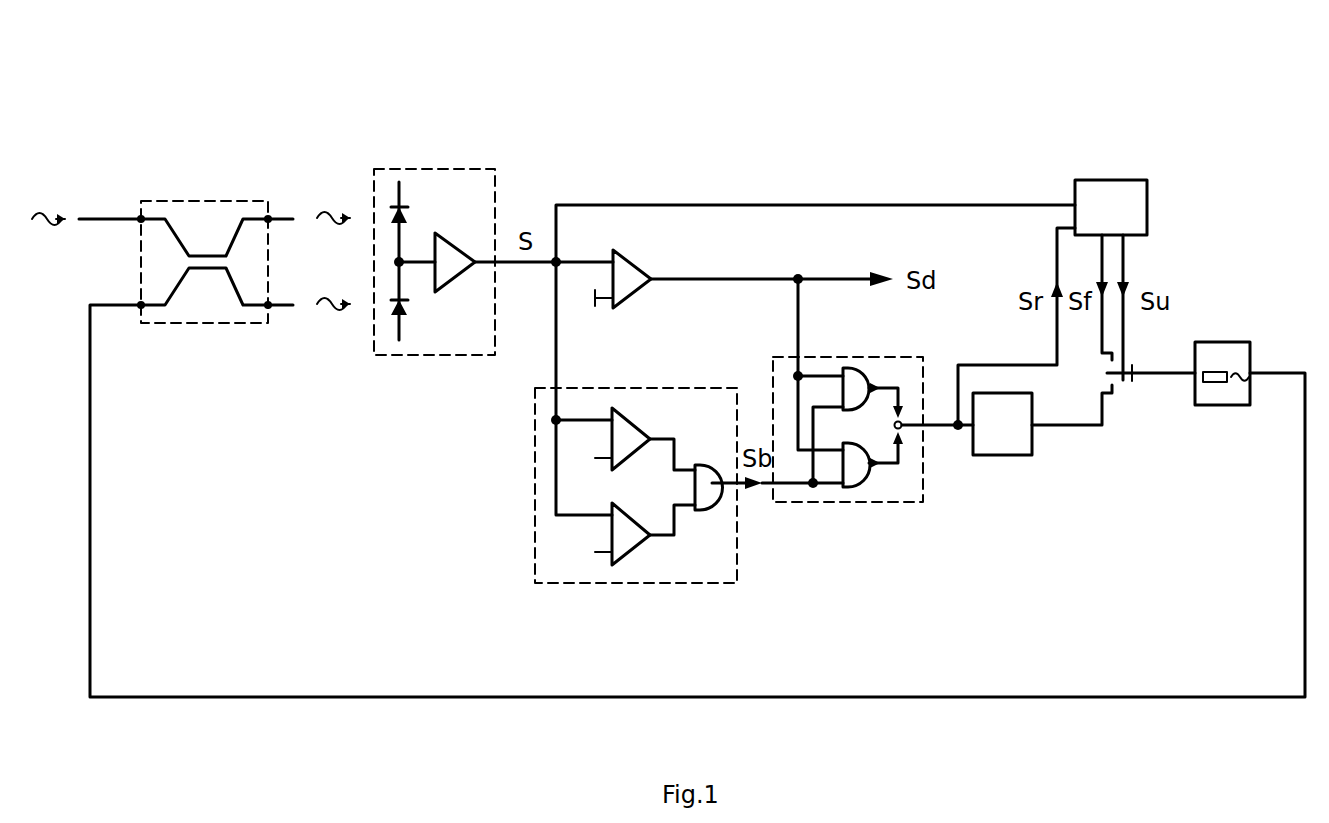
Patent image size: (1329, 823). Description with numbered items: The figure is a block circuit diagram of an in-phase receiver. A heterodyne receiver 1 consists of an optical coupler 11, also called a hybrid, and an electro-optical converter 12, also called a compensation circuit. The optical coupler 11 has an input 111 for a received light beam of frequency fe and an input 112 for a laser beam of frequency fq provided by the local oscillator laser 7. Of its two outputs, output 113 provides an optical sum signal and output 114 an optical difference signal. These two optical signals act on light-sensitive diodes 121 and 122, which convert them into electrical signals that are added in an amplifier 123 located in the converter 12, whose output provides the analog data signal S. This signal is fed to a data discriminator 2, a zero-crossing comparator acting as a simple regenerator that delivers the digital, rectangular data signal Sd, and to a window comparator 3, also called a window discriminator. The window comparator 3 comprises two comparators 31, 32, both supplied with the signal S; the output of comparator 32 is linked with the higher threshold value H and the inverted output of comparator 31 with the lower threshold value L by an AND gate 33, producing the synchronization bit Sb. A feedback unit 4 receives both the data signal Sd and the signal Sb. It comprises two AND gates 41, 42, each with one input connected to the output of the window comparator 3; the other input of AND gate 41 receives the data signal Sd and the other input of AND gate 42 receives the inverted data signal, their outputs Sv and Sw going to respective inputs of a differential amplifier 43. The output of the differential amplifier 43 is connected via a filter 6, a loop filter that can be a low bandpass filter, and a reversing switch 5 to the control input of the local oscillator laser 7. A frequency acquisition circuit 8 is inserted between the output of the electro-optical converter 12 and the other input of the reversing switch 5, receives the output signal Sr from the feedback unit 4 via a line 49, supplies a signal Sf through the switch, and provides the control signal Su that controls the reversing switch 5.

The heterodyne receiver 1 is at (915, 81).
The optical coupler 11 is at (204, 295).
The input 111 is at (115, 193).
The input 112 is at (142, 345).
The output 113 is at (301, 193).
The output 114 is at (300, 333).
The electro-optical converter 12 is at (443, 260).
The light-sensitive diode 121 is at (369, 175).
The light-sensitive diode 122 is at (373, 353).
The amplifier 123 is at (473, 203).
The data discriminator 2 is at (632, 267).
The window comparator 3 is at (655, 481).
The comparator 31 is at (647, 564).
The comparator 32 is at (648, 403).
The AND gate 33 is at (735, 512).
The feedback unit 4 is at (870, 436).
The AND gate 41 is at (856, 361).
The AND gate 42 is at (863, 499).
The differential amplifier 43 is at (931, 373).
The line 49 is at (1016, 326).
The reversing switch 5 is at (1151, 406).
The filter 6 is at (1006, 451).
The local oscillator laser 7 is at (1225, 342).
The frequency acquisition circuit 8 is at (1111, 180).